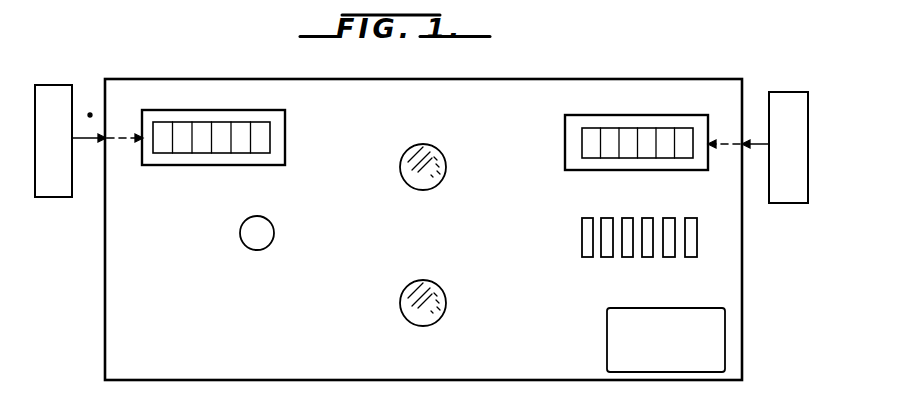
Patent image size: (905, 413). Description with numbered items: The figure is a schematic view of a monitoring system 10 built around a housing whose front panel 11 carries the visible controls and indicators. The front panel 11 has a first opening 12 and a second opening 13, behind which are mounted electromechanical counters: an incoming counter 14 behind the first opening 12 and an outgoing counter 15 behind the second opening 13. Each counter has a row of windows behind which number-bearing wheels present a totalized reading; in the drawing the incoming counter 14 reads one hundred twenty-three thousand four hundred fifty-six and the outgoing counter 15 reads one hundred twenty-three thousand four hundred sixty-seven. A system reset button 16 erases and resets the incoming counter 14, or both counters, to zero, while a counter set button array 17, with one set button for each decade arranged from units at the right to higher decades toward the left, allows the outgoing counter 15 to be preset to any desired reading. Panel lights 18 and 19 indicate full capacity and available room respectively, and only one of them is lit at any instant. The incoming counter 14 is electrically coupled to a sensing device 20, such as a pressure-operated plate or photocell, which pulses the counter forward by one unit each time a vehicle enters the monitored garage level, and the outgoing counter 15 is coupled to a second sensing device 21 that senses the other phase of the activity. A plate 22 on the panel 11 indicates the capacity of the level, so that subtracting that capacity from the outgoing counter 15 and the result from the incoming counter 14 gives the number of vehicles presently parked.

The monitoring system 10 is at (54, 301).
The front panel 11 is at (166, 360).
The first opening 12 is at (237, 125).
The second opening 13 is at (616, 130).
The incoming counter 14 is at (180, 123).
The outgoing counter 15 is at (627, 128).
The system reset button 16 is at (240, 233).
The counter set button array 17 is at (683, 294).
The full capacity panel light 18 is at (440, 152).
The available room panel light 19 is at (441, 288).
The sensing device 20 is at (55, 85).
The second sensing device 21 is at (808, 76).
The plate 22 is at (607, 344).